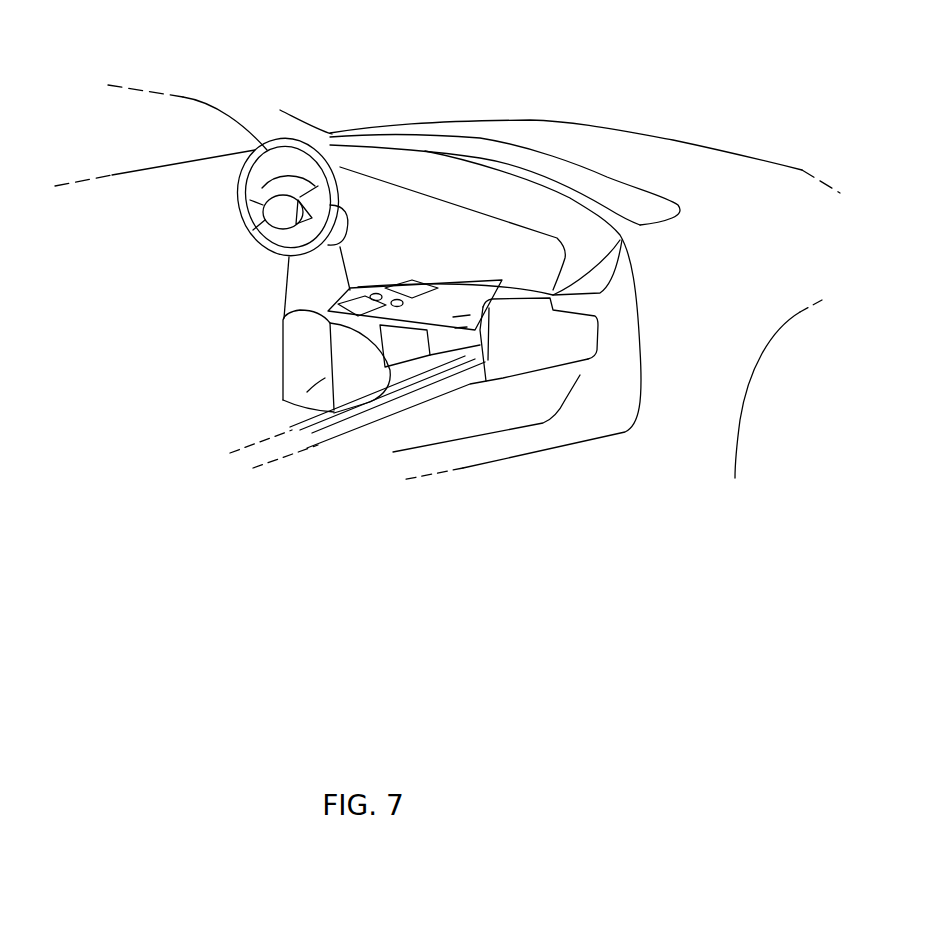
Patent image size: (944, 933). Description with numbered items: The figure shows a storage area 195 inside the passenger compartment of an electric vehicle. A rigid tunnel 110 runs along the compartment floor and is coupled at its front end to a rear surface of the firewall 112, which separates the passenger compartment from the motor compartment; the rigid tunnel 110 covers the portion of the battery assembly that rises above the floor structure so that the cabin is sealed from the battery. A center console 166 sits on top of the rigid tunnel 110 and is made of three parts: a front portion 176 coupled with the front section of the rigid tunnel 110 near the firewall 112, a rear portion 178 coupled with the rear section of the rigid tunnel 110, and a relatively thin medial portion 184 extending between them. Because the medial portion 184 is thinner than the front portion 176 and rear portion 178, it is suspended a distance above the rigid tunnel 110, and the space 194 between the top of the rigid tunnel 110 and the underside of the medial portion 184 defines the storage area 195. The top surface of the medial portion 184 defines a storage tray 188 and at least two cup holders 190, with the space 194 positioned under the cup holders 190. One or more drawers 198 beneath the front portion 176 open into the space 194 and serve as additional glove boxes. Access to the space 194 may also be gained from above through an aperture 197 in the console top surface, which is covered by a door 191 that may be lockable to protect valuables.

The rigid tunnel 110 is at (287, 448).
The firewall 112 is at (623, 353).
The center console 166 is at (517, 305).
The front portion 176 is at (562, 355).
The rear portion 178 is at (345, 392).
The medial portion 184 is at (377, 328).
The storage tray 188 is at (338, 305).
The cup holders 190 is at (350, 290).
The door 191 is at (407, 286).
The space 194 is at (403, 382).
The storage area 195 is at (432, 320).
The aperture 197 is at (428, 283).
The drawers 198 is at (465, 347).